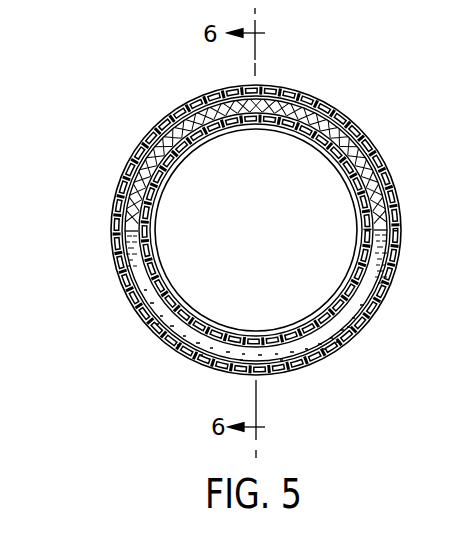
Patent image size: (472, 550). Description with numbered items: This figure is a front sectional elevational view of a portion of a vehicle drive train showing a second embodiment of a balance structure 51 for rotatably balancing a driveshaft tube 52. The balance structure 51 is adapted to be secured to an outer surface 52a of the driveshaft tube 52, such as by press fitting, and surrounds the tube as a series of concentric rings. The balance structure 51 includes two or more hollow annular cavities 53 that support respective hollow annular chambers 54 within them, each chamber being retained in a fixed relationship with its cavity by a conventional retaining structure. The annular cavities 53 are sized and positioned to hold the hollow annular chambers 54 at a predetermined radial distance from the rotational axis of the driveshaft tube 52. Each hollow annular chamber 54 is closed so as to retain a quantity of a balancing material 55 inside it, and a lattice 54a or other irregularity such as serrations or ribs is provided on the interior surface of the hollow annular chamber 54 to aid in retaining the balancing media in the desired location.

The balance structure 51 is at (296, 77).
The driveshaft tube 52 is at (334, 135).
The outer surface of the driveshaft tube 52a is at (353, 146).
The hollow annular cavities 53 is at (387, 168).
The hollow annular chambers 54 is at (398, 212).
The lattice 54a is at (111, 216).
The balancing material 55 is at (384, 276).